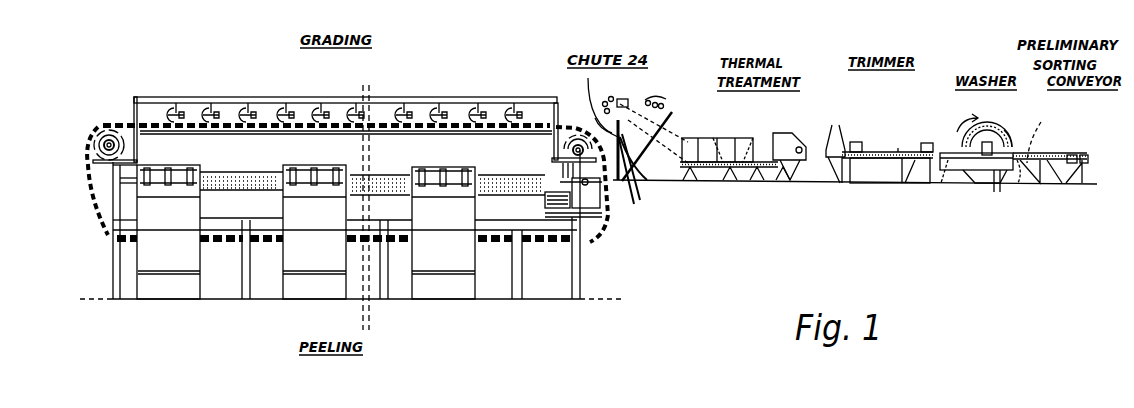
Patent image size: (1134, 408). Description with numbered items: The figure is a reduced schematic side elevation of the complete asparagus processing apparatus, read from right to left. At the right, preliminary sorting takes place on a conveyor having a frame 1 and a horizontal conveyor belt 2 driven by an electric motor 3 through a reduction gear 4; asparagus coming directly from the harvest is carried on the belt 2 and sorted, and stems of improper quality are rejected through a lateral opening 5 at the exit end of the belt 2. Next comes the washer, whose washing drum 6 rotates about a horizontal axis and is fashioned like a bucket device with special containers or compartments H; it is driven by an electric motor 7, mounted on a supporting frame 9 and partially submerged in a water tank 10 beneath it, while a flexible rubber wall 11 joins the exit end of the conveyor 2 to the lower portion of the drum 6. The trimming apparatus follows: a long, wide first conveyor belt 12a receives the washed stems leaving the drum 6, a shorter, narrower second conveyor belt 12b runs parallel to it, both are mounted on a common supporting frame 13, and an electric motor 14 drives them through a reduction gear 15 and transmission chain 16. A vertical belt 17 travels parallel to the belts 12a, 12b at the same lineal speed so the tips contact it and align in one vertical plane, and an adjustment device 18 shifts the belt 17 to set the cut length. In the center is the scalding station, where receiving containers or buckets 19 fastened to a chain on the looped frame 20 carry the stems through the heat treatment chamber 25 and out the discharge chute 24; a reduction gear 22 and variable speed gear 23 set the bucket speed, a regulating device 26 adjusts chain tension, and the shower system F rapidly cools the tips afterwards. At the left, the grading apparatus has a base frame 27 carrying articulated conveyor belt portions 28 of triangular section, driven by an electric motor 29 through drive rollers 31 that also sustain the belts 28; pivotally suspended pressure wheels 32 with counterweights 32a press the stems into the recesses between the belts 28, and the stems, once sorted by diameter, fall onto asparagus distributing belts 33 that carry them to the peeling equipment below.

The frame 1 is at (1048, 164).
The horizontal conveyor belt 2 is at (1047, 152).
The electric motor 3 is at (1072, 155).
The reduction gear 4 is at (1084, 155).
The lateral opening 5 is at (1036, 139).
The washing drum 6 is at (1009, 146).
The electric motor 7 is at (973, 162).
The supporting frame 9 is at (994, 190).
The water tank 10 is at (978, 168).
The flexible rubber wall 11 is at (1018, 184).
The first conveyor belt 12a is at (937, 194).
The second conveyor belt 12b is at (883, 152).
The common supporting frame 13 is at (913, 183).
The electric motor 14 is at (853, 142).
The reduction gear 15 is at (838, 136).
The transmission chain 16 is at (827, 181).
The vertical belt 17 is at (898, 150).
The adjustment device 18 is at (923, 143).
The receiving containers or buckets 19 is at (783, 140).
The looped frame 20 is at (798, 177).
The reduction gear 22 is at (623, 110).
The variable speed gear 23 is at (640, 178).
The discharge chute 24 is at (638, 129).
The heat treatment chamber 25 is at (712, 138).
The regulating device 26 is at (798, 149).
The base frame 27 is at (455, 102).
The articulated conveyor belt portions 28 is at (423, 124).
The electric motor 29 is at (547, 208).
The drive rollers 31 is at (112, 122).
The pressure or weighted wheels 32 is at (306, 101).
The counterweights 32a is at (217, 107).
The asparagus distributing belts 33 is at (223, 189).
The shower system F is at (664, 97).
The containers or compartments H is at (996, 126).